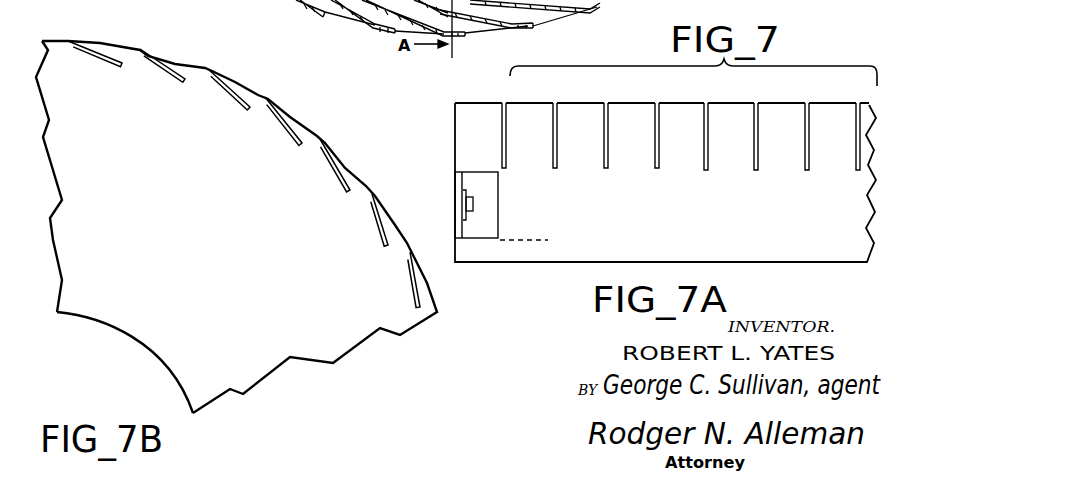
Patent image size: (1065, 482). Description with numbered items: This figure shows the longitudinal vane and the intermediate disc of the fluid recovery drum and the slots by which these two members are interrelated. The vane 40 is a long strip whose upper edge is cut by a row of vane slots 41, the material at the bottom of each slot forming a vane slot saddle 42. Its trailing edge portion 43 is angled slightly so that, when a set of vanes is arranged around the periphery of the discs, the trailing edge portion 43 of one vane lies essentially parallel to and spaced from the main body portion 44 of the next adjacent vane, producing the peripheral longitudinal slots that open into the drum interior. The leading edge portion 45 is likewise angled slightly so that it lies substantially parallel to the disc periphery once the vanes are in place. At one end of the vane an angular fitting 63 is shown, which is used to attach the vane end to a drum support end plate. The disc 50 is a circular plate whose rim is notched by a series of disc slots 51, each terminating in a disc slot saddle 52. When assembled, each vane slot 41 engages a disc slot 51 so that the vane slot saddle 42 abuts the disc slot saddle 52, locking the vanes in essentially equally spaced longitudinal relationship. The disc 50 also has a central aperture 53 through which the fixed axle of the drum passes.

In FIG. 7A, the vane 40 is at (579, 216).
In FIG. 7A, the vane slot 41 is at (706, 124).
In FIG. 7A, the vane slot saddle 42 is at (604, 168).
In FIG. 7A, the trailing edge portion 43 is at (510, 117).
In FIG. 7A, the main body portion 44 is at (548, 172).
In FIG. 7, the leading edge portion 45 is at (276, 12).
In FIG. 7A, the leading edge portion 45 is at (657, 238).
In FIG. 7B, the disc 50 is at (314, 178).
In FIG. 7B, the disc slot 51 is at (143, 54).
In FIG. 7B, the disc slot saddle 52 is at (249, 110).
In FIG. 7B, the central aperture 53 is at (152, 354).
In FIG. 7A, the angular fitting 63 is at (462, 190).